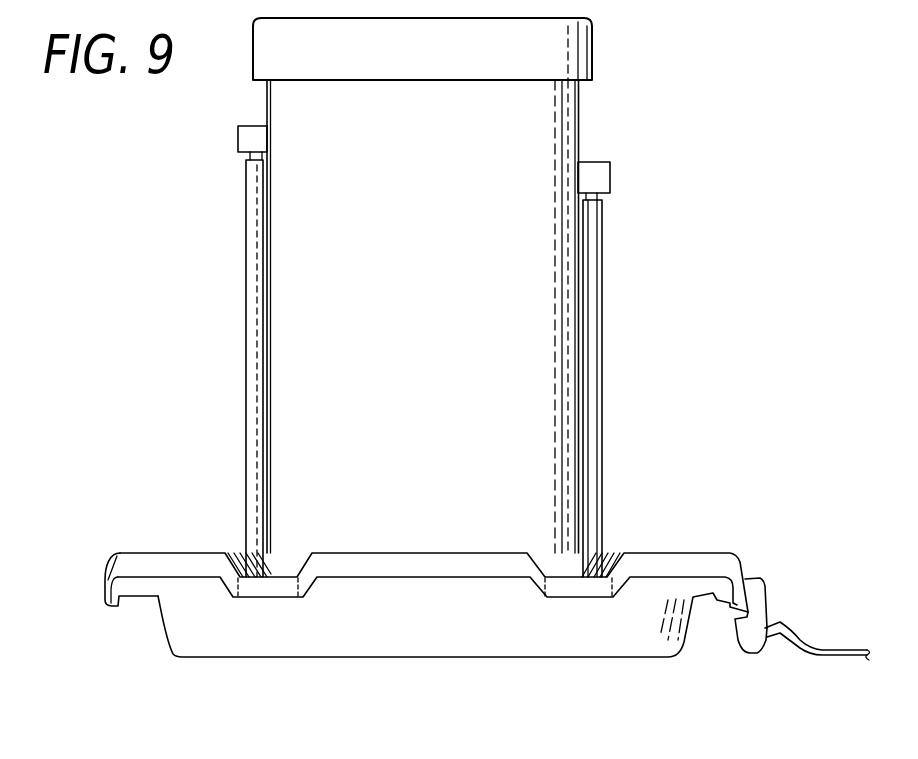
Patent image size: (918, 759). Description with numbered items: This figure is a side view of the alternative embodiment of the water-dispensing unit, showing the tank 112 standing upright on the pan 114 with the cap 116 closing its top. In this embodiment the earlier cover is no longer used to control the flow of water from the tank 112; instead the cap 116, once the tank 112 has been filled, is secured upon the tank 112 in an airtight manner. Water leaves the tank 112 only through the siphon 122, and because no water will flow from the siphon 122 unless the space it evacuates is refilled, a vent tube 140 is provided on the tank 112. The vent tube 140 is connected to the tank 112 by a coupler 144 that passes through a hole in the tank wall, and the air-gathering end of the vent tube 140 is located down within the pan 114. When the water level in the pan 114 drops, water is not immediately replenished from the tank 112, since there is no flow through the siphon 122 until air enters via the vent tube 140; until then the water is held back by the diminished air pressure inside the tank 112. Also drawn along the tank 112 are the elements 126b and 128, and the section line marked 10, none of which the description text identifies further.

The cap 116 is at (592, 47).
The tank 112 is at (578, 135).
The coupler 144 is at (238, 138).
The vent tube 140 is at (247, 333).
The right clamp block 126b is at (610, 178).
The right guide rod 128 is at (602, 236).
The pan 114 is at (657, 553).
The siphon 122 is at (628, 381).
The section line 10- 10 is at (192, 262).